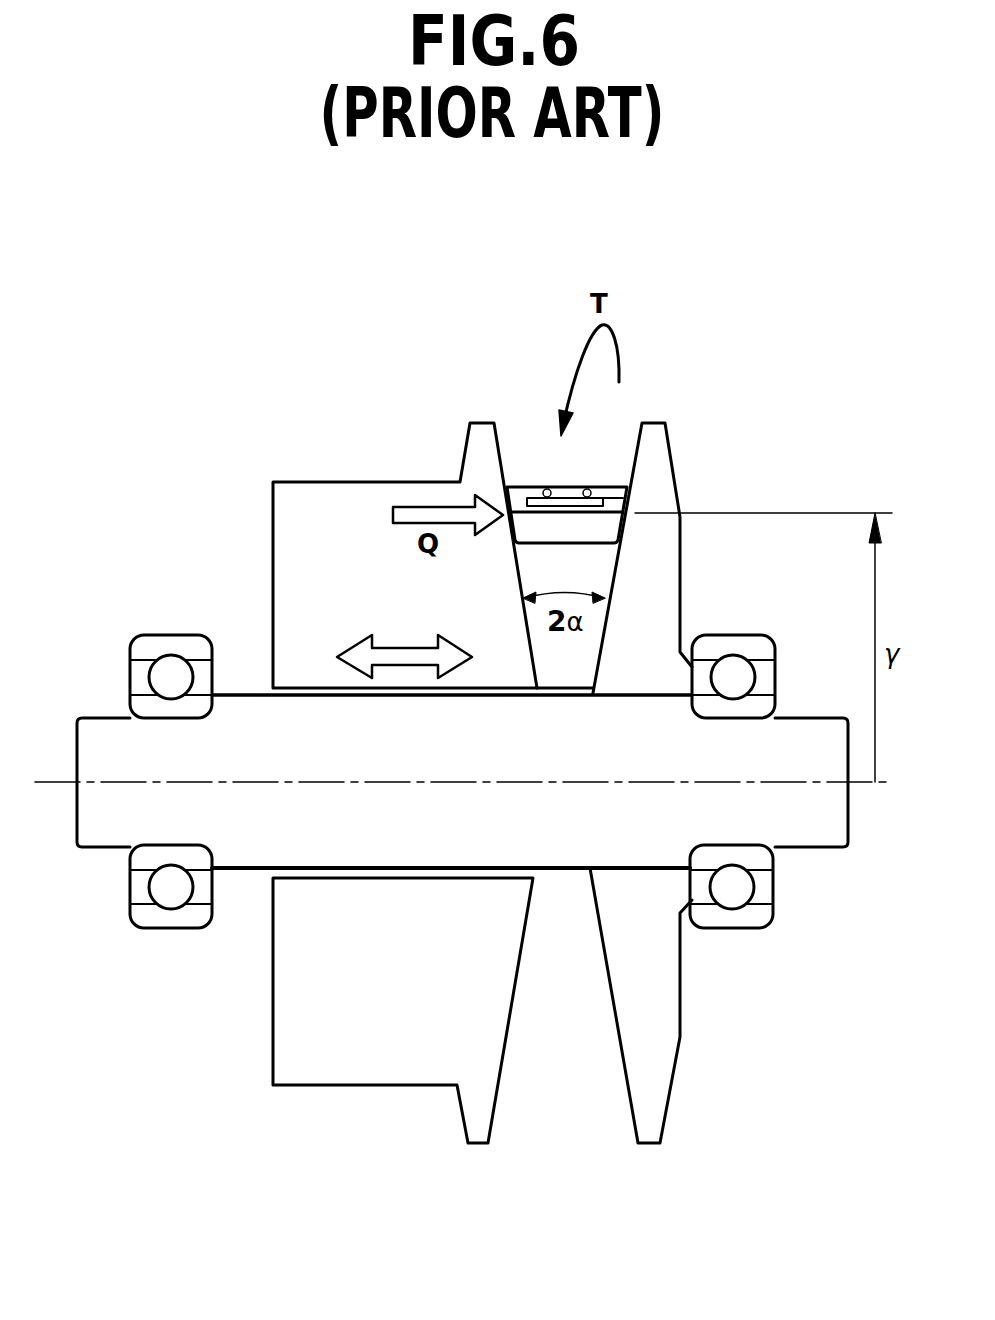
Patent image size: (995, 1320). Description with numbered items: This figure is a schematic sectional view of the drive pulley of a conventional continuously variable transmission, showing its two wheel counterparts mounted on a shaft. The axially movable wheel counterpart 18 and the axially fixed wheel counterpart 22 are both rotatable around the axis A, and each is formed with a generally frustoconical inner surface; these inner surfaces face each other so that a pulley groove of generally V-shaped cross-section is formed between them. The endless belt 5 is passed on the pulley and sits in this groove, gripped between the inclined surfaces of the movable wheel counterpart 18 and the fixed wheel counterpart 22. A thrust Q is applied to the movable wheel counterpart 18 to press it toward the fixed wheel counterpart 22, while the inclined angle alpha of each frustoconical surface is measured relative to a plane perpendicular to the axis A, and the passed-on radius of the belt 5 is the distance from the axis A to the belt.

The belt 5 is at (552, 487).
The axially movable wheel counterpart 18 is at (273, 508).
The axially fixed wheel counterpart 22 is at (675, 467).
The axis A is at (792, 783).